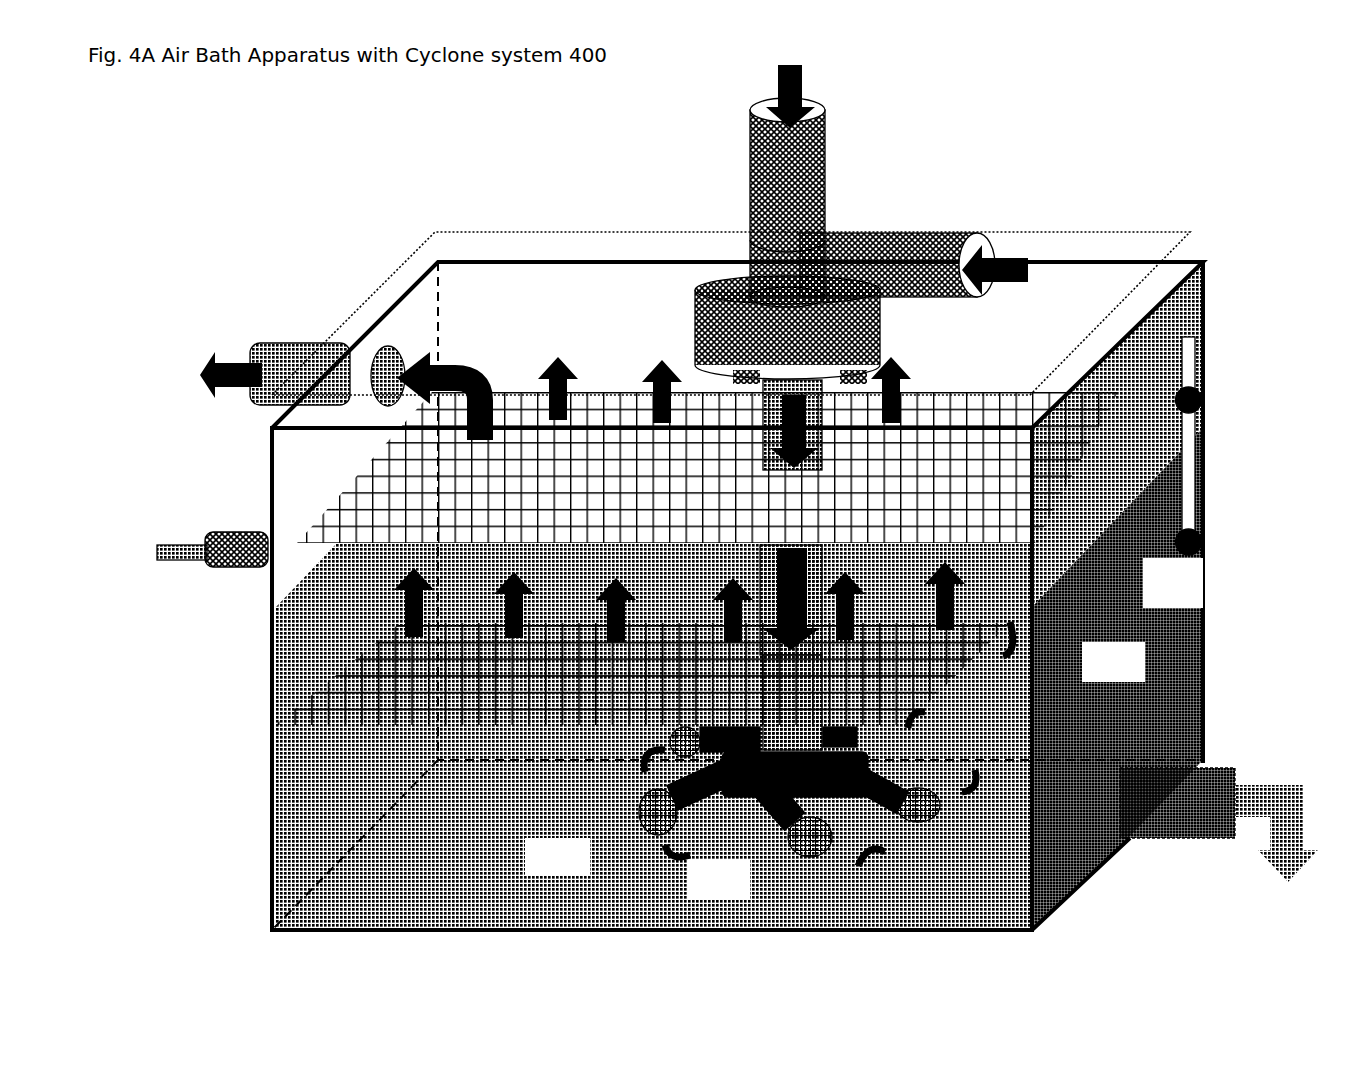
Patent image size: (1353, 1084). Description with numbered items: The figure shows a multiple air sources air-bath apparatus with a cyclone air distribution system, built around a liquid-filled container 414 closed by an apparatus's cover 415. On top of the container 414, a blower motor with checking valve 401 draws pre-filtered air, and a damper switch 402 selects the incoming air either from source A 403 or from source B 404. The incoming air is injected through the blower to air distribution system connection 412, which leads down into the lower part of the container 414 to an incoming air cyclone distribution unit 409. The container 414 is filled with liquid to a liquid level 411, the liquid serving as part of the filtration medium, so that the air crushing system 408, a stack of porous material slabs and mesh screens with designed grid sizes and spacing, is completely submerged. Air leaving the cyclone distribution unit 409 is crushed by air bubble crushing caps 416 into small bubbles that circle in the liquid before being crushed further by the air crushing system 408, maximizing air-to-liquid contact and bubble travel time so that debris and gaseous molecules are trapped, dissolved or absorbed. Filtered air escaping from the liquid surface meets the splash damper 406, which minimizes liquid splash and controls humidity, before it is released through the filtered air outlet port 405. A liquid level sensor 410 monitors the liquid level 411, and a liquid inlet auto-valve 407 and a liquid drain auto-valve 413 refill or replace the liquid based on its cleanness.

The blower motor with checking valve 401 is at (695, 333).
The damper switch 402 is at (738, 243).
The source A 403 is at (808, 88).
The source B 404 is at (1040, 268).
The filtered air outlet port 405 is at (250, 350).
The splash damper 406 is at (335, 492).
The liquid inlet auto-valve 407 is at (243, 573).
The air crushing system 408 is at (323, 728).
The incoming air cyclone distribution unit 409 is at (740, 790).
The liquid level sensor 410 is at (1195, 445).
The liquid level 411 is at (1088, 575).
The blower to air distribution system connection 412 is at (850, 572).
The liquid drain auto-valve 413 is at (1240, 762).
The container 414 is at (1040, 850).
The apparatus's cover 415 is at (412, 245).
The air bubble crushing caps 416 is at (642, 825).